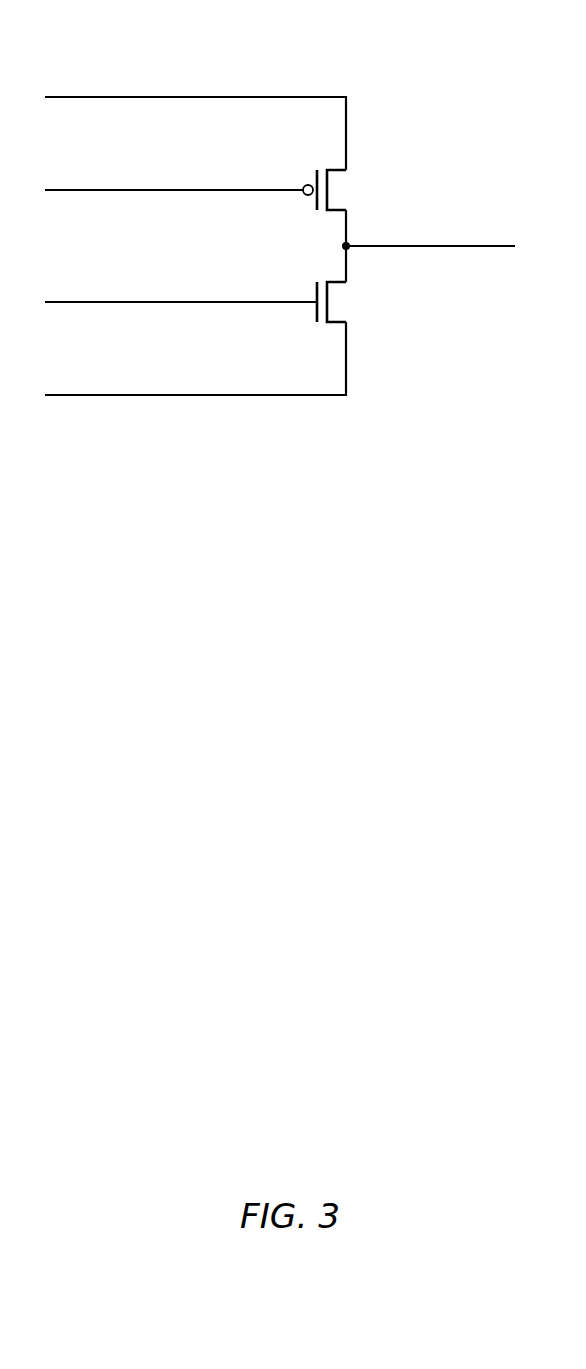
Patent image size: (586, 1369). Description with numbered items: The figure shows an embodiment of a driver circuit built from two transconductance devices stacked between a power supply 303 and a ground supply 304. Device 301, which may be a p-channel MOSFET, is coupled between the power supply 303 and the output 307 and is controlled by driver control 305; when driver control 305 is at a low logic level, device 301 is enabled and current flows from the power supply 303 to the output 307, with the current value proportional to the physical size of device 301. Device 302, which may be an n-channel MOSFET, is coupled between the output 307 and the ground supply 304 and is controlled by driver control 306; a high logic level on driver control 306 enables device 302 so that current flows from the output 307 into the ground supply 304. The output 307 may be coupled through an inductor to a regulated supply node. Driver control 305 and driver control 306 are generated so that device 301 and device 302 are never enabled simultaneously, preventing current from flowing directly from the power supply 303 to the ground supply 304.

The device 301 is at (338, 191).
The device 302 is at (338, 301).
The power supply 303 is at (195, 105).
The ground supply 304 is at (195, 373).
The driver control 305 is at (174, 165).
The driver control 306 is at (181, 275).
The output 307 is at (429, 246).